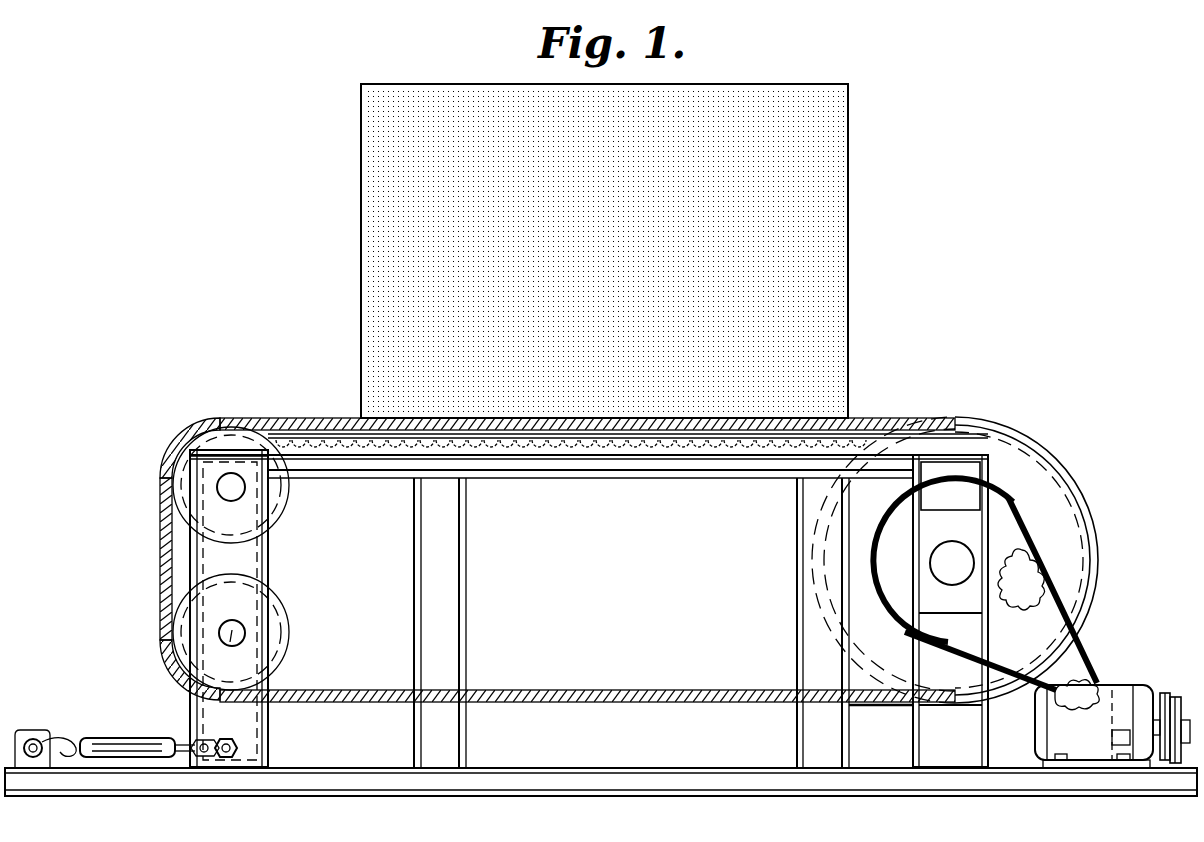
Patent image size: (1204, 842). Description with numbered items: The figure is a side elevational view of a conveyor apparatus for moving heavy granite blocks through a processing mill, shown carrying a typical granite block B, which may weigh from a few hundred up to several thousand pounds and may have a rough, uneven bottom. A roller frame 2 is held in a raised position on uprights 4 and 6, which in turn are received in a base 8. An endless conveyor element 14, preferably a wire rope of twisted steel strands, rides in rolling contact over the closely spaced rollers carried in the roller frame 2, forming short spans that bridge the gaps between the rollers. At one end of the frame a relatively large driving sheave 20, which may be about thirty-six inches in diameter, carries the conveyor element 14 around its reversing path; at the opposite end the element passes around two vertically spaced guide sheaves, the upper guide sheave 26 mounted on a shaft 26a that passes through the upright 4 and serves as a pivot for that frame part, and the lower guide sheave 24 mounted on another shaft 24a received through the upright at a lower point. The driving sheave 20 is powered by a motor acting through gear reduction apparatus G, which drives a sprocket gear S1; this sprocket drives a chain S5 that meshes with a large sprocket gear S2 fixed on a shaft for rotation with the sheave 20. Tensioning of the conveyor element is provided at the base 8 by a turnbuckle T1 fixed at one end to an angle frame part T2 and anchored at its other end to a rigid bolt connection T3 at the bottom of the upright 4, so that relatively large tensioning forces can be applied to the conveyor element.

The granite block B is at (851, 177).
The endless conveyor element 14 is at (868, 424).
The guide sheave 26 is at (178, 486).
The shaft 26a is at (233, 480).
The guide sheave 24 is at (278, 620).
The shaft 24a is at (233, 647).
The upright 4 is at (268, 557).
The roller frame 2 is at (672, 470).
The upright 6 is at (808, 640).
The driving sheave 20 is at (1052, 494).
The chain S5 is at (1058, 596).
The sprocket gear S1 is at (1092, 677).
The large sprocket gear S2 is at (1021, 595).
The gear reduction apparatus G is at (1112, 708).
The base 8 is at (538, 773).
The angle frame part T2 is at (47, 738).
The turnbuckle T1 is at (105, 738).
The rigid bolt connection T3 is at (246, 750).